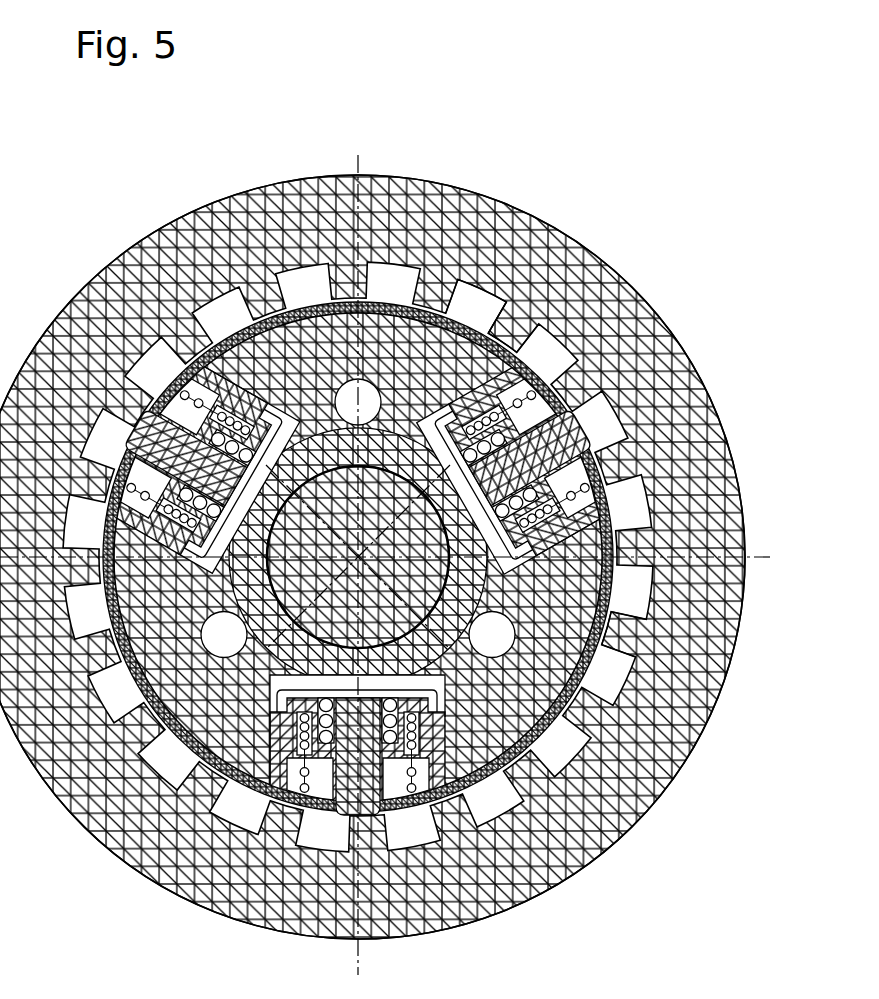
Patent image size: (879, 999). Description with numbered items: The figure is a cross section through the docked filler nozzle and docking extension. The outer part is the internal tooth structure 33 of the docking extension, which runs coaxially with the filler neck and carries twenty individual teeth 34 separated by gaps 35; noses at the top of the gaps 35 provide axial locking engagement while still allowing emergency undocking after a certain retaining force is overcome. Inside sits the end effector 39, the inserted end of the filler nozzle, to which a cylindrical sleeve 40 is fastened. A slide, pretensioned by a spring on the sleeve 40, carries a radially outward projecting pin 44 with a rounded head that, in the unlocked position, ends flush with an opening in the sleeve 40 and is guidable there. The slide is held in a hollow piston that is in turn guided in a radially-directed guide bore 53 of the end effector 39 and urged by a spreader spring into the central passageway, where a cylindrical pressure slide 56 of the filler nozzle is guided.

The internal tooth structure 33 is at (530, 268).
The internal tooth 34 is at (505, 327).
The gap 35 is at (460, 307).
The end effector 39 is at (305, 340).
The cylindrical sleeve 40 is at (380, 310).
The pin 44 is at (603, 390).
The guide bore 53 is at (620, 622).
The pressure slide 56 is at (163, 232).